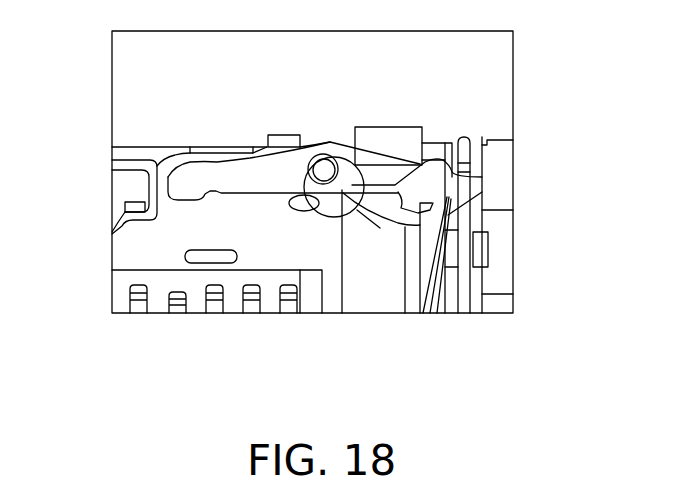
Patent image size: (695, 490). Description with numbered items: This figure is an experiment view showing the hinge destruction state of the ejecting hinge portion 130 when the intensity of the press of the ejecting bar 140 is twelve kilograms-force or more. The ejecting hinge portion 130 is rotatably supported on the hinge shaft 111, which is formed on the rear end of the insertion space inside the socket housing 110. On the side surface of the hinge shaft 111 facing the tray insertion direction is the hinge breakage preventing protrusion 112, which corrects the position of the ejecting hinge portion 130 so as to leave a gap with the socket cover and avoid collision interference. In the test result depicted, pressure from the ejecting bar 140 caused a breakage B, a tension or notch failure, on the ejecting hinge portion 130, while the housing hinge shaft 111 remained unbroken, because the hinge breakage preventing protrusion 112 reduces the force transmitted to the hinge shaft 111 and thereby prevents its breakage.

The socket housing 110 is at (190, 240).
The hinge shaft 111 is at (315, 153).
The hinge breakage preventing protrusion 112 is at (475, 212).
The ejecting hinge portion 130 is at (232, 178).
The ejecting bar 140 is at (468, 287).
The breakage B is at (322, 213).